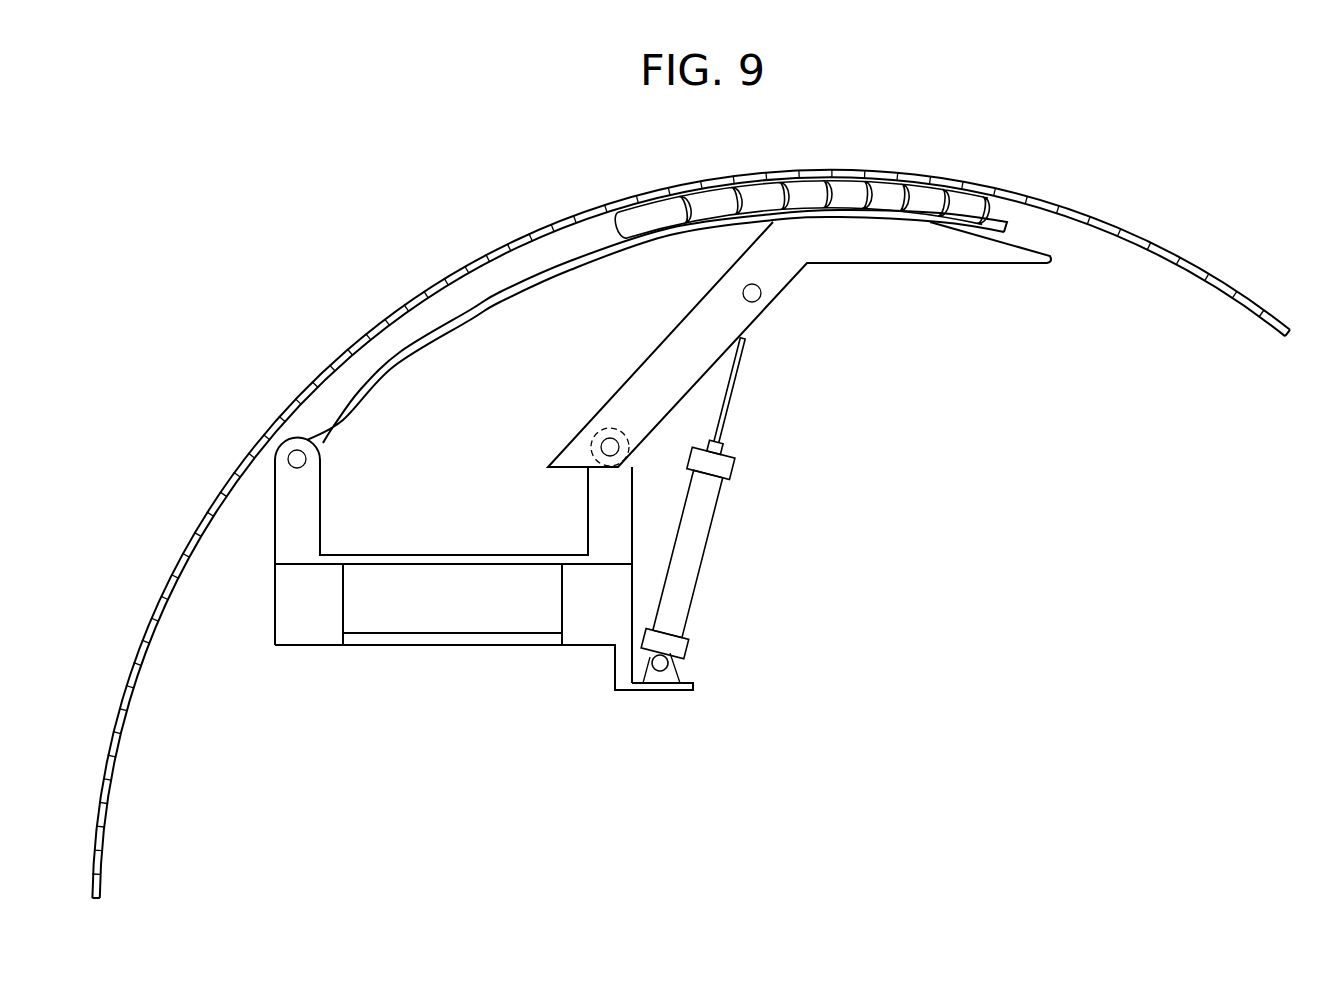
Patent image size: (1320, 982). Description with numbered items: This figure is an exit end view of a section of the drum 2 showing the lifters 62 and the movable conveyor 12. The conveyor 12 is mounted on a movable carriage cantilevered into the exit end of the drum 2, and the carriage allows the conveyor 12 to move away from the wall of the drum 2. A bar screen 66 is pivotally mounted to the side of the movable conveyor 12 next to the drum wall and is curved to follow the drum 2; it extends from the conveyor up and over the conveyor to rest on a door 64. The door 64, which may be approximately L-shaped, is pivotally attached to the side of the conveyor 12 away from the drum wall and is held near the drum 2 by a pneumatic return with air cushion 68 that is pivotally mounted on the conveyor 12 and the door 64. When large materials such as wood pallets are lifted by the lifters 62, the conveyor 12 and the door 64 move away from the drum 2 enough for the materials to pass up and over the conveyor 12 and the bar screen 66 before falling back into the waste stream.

The drum 2 is at (1244, 296).
The movable conveyor 12 is at (364, 654).
The lifters 62 is at (876, 158).
The door 64 is at (772, 306).
The bar screen 66 is at (400, 352).
The pneumatic return with air cushion 68 is at (714, 523).